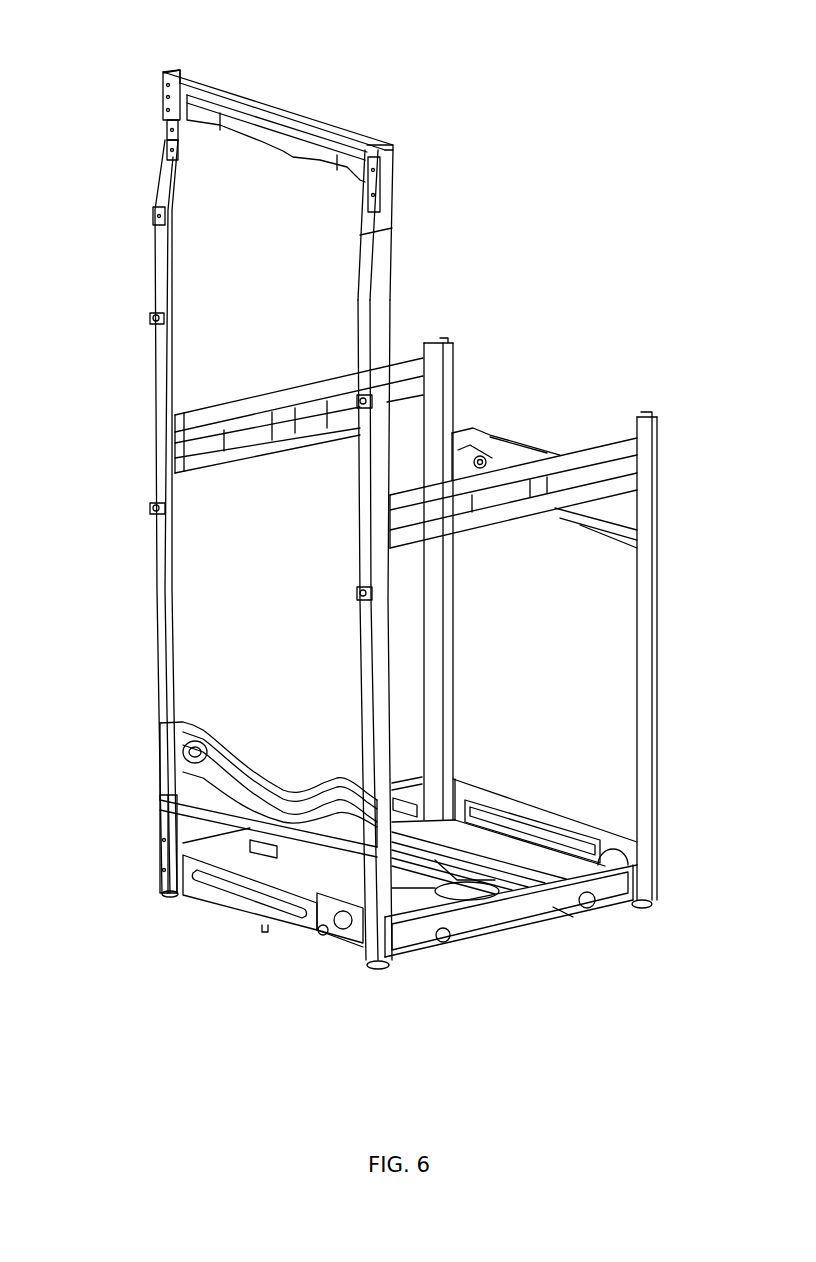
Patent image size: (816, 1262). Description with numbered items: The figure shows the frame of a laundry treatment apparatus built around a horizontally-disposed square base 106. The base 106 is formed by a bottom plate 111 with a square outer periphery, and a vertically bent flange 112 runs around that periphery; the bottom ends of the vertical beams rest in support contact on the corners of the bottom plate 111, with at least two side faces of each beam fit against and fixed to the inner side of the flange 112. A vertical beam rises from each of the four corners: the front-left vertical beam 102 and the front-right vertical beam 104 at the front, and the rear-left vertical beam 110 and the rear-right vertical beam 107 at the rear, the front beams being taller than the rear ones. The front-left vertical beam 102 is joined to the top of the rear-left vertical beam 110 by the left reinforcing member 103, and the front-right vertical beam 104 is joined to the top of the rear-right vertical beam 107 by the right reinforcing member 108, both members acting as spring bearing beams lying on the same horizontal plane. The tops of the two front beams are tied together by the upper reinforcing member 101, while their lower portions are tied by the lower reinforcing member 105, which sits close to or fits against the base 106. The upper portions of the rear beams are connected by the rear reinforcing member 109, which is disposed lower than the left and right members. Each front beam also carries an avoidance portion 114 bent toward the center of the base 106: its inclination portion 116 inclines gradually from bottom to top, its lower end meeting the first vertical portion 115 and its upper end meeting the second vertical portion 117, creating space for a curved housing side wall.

The upper reinforcing member 101 is at (188, 70).
The second vertical portion 117 is at (163, 110).
The inclination portion 116 is at (172, 170).
The front-left vertical beam 102 is at (160, 210).
The first vertical portion 115 is at (163, 260).
The avoidance portion 114 is at (360, 243).
The front-right vertical beam 104 is at (380, 683).
The rear-left vertical beam 110 is at (443, 347).
The left reinforcing member 103 is at (240, 412).
The rear reinforcing member 109 is at (513, 438).
The right reinforcing member 108 is at (615, 453).
The rear-right vertical beam 107 is at (652, 763).
The lower reinforcing member 105 is at (162, 817).
The base 106 is at (287, 930).
The bottom plate 111 is at (430, 897).
The flange 112 is at (557, 905).